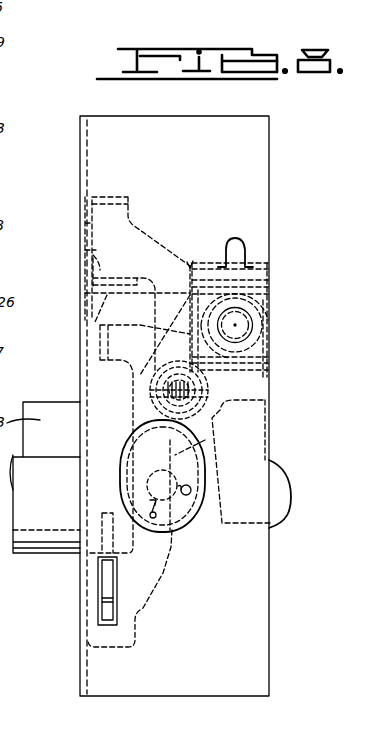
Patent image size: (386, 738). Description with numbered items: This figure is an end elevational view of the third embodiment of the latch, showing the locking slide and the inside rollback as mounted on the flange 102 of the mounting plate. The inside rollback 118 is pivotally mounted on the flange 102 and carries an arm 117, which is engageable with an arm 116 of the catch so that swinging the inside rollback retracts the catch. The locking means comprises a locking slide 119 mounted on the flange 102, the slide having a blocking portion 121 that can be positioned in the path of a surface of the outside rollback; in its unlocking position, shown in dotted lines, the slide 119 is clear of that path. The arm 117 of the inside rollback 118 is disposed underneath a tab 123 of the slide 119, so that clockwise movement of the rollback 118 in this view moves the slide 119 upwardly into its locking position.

The flange 102 is at (160, 126).
The arm 116 is at (80, 333).
The arm 117 is at (74, 296).
The inside rollback 118 is at (263, 418).
The locking slide 119 is at (80, 226).
The blocking portion 121 is at (98, 191).
The tab 123 is at (80, 251).